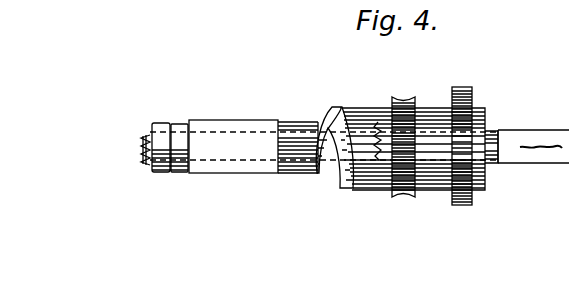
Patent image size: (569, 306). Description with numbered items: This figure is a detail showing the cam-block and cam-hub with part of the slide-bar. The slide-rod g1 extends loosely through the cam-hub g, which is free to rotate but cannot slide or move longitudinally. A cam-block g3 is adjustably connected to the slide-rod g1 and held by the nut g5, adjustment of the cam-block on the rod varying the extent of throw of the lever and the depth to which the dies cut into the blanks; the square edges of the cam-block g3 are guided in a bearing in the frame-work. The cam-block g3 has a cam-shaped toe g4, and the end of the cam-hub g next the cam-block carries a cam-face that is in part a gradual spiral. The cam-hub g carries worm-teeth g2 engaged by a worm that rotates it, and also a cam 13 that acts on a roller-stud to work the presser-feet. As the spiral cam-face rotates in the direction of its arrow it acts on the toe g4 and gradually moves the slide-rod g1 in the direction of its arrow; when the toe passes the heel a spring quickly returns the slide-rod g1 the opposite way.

The slide-rod g1 is at (140, 146).
The nut g5 is at (181, 123).
The cam-block g3 is at (233, 135).
The cam-shaped toe g4 is at (330, 165).
The cam-hub g is at (371, 109).
The worm-teeth g2 is at (407, 97).
The cam 13 is at (462, 139).